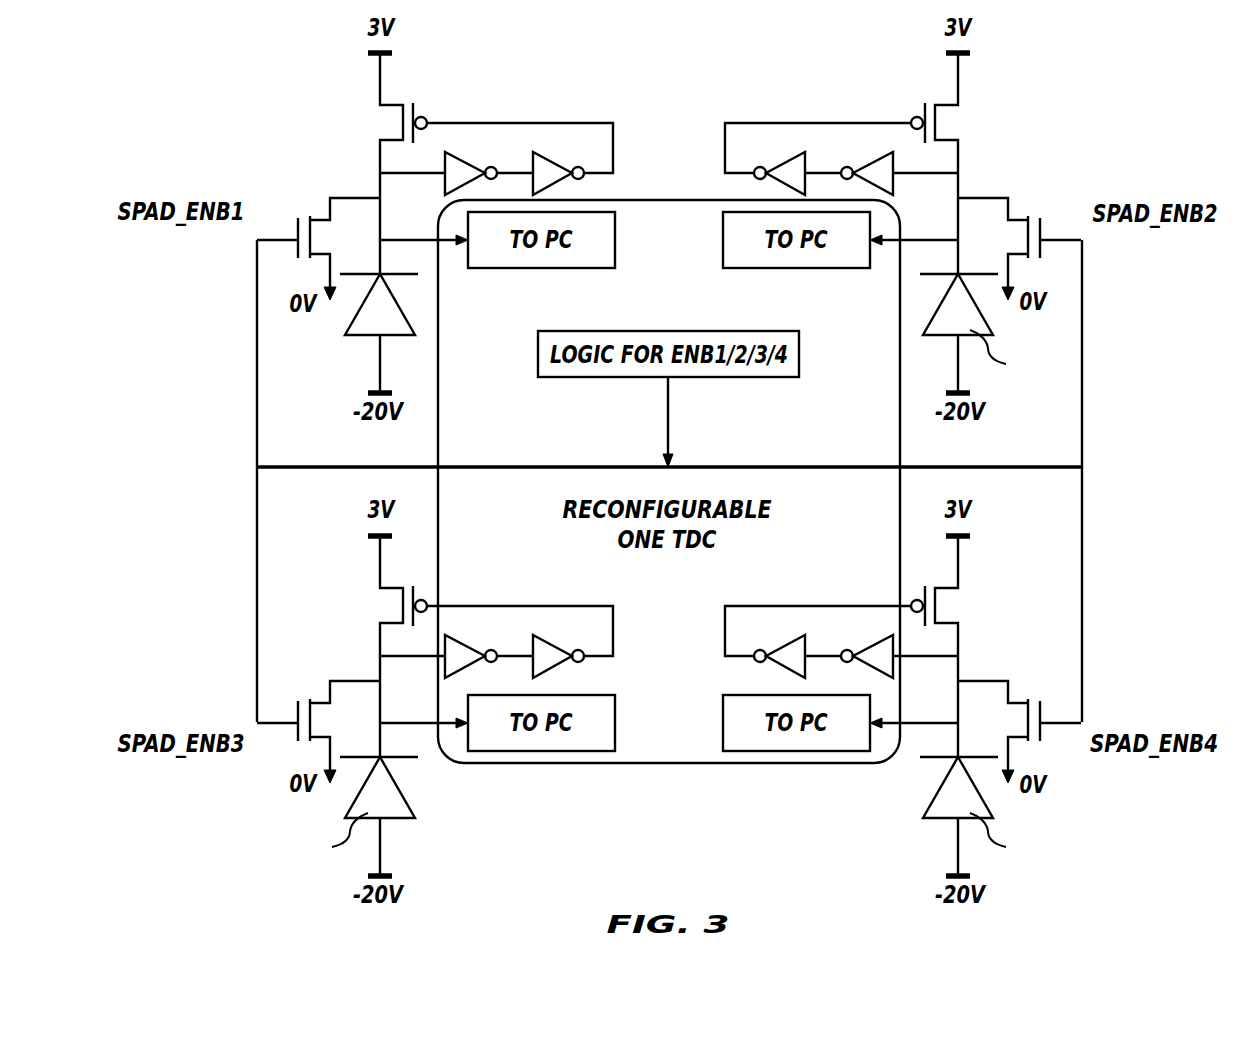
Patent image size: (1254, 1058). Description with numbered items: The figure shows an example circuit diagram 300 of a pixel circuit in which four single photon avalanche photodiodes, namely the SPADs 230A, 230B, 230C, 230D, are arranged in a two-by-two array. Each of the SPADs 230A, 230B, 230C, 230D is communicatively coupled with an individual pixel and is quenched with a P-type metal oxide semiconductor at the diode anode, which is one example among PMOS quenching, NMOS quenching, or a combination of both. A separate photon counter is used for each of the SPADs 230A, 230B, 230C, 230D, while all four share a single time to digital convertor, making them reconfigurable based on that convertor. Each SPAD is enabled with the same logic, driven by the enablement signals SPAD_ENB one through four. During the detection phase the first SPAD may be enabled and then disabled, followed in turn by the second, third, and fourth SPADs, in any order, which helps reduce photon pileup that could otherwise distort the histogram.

The circuit diagram 300 is at (1061, 108).
The single photon avalanche photodiode 230A is at (368, 330).
The single photon avalanche photodiode 230B is at (977, 333).
The single photon avalanche photodiode 230C is at (362, 816).
The single photon avalanche photodiode 230D is at (977, 816).